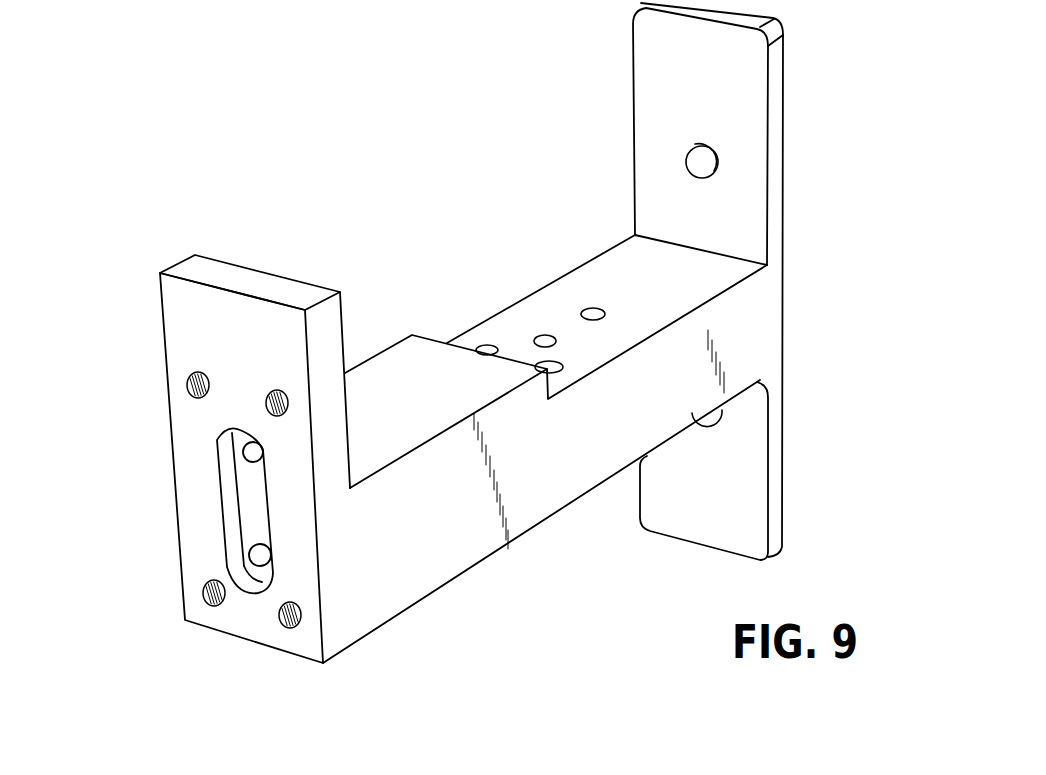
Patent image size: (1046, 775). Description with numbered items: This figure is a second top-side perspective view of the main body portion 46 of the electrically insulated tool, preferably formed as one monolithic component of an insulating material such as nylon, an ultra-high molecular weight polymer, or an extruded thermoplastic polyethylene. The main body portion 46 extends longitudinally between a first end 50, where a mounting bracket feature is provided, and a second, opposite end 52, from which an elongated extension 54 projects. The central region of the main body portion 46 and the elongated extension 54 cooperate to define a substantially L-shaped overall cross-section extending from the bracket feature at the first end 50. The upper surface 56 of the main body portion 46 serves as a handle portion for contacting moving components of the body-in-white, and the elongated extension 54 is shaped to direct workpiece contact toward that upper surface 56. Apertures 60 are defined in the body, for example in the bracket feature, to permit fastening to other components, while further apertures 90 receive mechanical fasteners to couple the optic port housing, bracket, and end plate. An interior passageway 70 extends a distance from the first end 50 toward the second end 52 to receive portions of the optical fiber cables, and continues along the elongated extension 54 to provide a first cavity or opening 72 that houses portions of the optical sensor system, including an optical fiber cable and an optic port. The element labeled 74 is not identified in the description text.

The main body portion 46 is at (862, 214).
The first end 50 is at (657, 556).
The second end 52 is at (125, 590).
The elongated extension 54 is at (258, 285).
The upper surface 56 is at (417, 362).
The apertures 60 is at (692, 148).
The interior passageway 70 is at (257, 560).
The first cavity or opening 72 is at (225, 492).
The through opening 74 is at (250, 455).
The apertures 90 is at (190, 392).